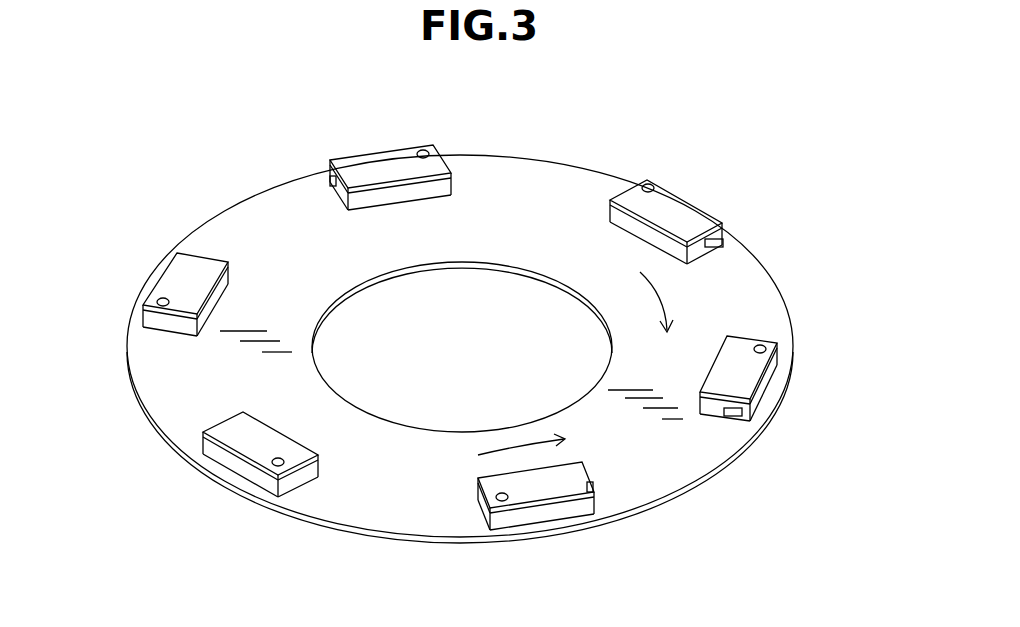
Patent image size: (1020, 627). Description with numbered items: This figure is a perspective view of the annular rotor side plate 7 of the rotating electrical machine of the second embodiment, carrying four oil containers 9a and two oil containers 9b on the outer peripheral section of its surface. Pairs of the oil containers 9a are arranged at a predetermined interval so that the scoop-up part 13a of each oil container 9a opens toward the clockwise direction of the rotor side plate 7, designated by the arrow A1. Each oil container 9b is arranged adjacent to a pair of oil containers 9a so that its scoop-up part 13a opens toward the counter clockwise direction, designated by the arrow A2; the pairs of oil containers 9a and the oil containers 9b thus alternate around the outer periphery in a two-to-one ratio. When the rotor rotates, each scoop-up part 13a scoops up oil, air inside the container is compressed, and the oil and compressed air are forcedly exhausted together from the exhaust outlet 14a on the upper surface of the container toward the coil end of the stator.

The rotor side plate 7 is at (786, 304).
The oil container 9a is at (178, 278).
The oil container 9b is at (374, 162).
The scoop-up part 13a is at (333, 182).
The exhaust outlet 14a is at (427, 152).
The clockwise direction A1 is at (671, 302).
The counter clockwise direction A2 is at (540, 436).